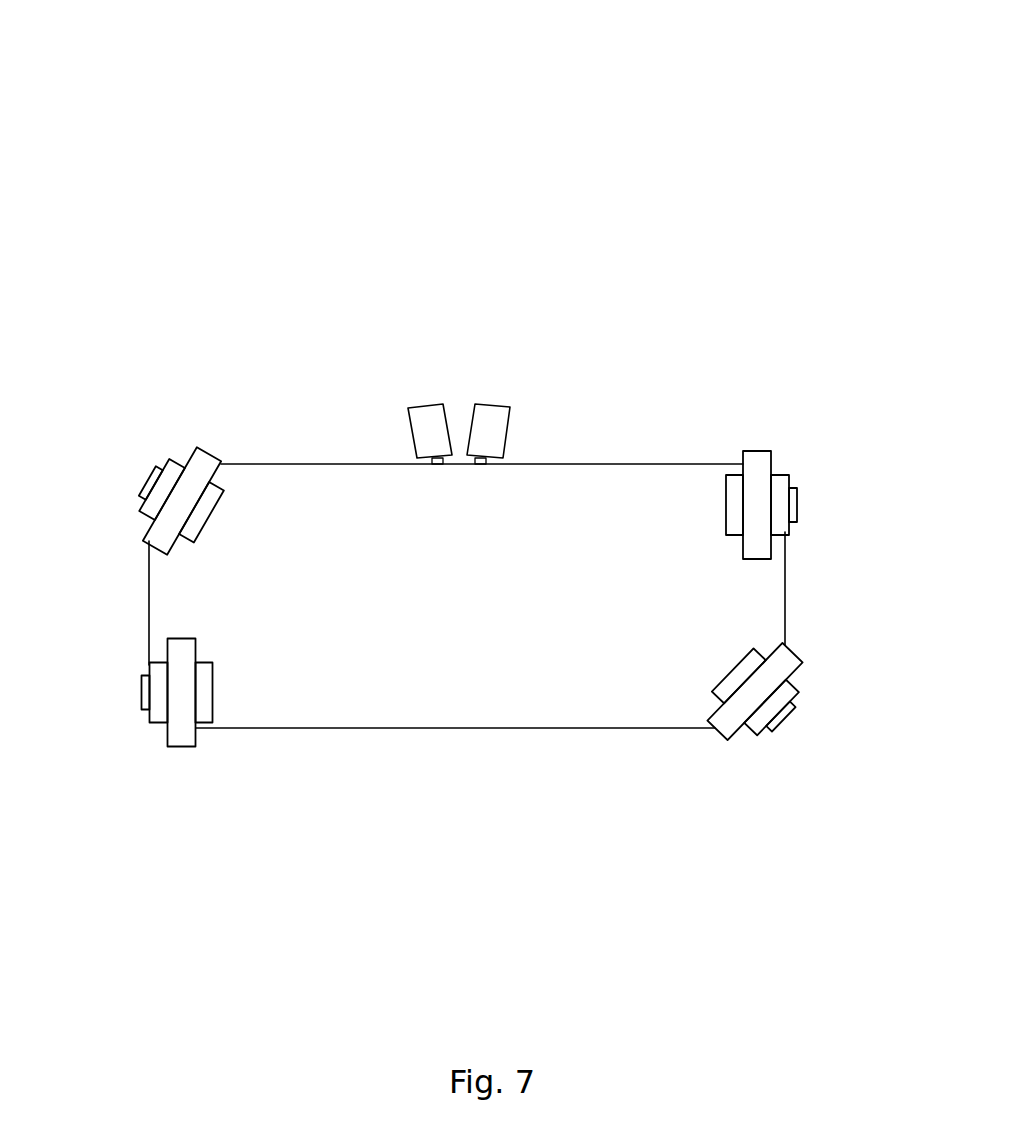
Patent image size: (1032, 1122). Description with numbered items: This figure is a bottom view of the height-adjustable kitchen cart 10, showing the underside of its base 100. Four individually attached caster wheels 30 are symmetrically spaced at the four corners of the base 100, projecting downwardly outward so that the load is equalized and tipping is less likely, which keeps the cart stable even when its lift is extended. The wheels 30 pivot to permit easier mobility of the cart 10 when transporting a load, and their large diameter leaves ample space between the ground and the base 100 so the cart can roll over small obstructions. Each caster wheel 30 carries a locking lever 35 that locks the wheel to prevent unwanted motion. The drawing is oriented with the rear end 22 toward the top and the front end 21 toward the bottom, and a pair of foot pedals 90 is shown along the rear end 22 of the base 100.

The height-adjustable kitchen cart 10 is at (702, 132).
The base 100 is at (463, 572).
The rear end 22 is at (609, 446).
The front end 21 is at (596, 825).
The foot pedal 90 is at (459, 396).
The caster wheel 30 is at (190, 477).
The locking lever 35 is at (796, 503).